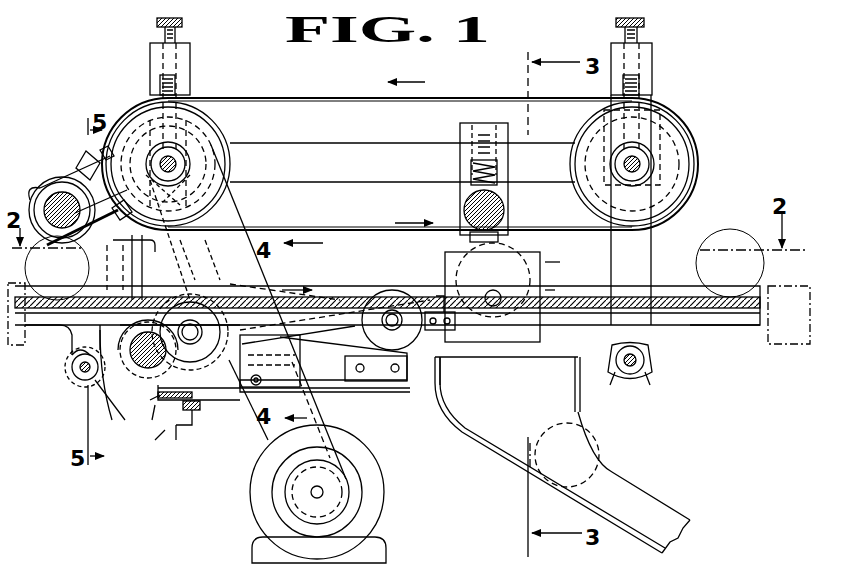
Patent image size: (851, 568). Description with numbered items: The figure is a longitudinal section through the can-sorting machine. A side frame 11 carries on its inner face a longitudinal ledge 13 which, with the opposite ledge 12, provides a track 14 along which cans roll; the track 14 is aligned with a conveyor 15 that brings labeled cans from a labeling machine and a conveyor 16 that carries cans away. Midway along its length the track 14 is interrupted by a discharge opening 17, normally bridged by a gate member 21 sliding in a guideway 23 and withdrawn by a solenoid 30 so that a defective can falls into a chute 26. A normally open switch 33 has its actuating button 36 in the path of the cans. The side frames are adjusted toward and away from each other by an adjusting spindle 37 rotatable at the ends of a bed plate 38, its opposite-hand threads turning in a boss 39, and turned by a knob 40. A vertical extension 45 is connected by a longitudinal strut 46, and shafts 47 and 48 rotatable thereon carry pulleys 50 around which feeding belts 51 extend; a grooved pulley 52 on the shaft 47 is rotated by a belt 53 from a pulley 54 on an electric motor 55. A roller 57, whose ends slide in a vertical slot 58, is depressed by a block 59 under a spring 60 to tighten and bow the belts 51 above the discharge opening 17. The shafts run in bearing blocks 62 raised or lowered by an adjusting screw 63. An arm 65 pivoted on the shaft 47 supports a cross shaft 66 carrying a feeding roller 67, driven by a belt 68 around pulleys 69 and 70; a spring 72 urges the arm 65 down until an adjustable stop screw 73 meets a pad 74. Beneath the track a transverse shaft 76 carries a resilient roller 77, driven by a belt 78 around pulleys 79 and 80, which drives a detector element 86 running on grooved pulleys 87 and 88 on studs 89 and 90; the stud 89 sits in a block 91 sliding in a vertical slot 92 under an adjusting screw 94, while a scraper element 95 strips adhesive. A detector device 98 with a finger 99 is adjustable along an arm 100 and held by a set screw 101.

The longitudinal side frame 11 is at (740, 325).
The longitudinal ledge 12 is at (632, 210).
The longitudinal ledge 13 is at (56, 302).
The track 14 is at (672, 300).
The conveyor 15 is at (64, 347).
The conveyor 16 is at (776, 345).
The discharge opening 17 is at (530, 345).
The gate member 21 is at (545, 290).
The guideway 23 is at (546, 296).
The chute 26 is at (455, 436).
The solenoid 30 is at (440, 358).
The microactuated switch 33 is at (446, 368).
The actuating button 36 is at (440, 300).
The adjusting spindle 37 is at (80, 372).
The bed plate 38 is at (150, 440).
The boss 39 is at (88, 385).
The knob 40 is at (72, 368).
The vertical extension 45 is at (182, 52).
The longitudinal strut 46 is at (414, 161).
The shaft 47 is at (177, 164).
The shaft 48 is at (640, 164).
The pulley 50 is at (198, 108).
The feeding belt 51 is at (370, 232).
The grooved pulley 52 is at (248, 190).
The belt 53 is at (262, 448).
The pulley 54 is at (272, 476).
The electric motor 55 is at (292, 492).
The roller 57 is at (504, 206).
The vertical slot 58 is at (468, 170).
The block 59 is at (494, 184).
The spring 60 is at (492, 162).
The bearing block 62 is at (710, 179).
The adjusting screw 63 is at (176, 84).
The arm 65 is at (93, 160).
The cross shaft 66 is at (75, 187).
The feeding roller 67 is at (48, 200).
The belt 68 is at (102, 149).
The pulley 69 is at (190, 142).
The pulley 70 is at (40, 212).
The spring 72 is at (160, 240).
The adjustable stop screw 73 is at (72, 243).
The pad 74 is at (108, 267).
The transverse shaft 76 is at (140, 372).
The resilient roller 77 is at (150, 380).
The belt 78 is at (200, 252).
The pulley 79 is at (200, 170).
The pulley 80 is at (110, 420).
The detector element 86 is at (360, 380).
The grooved pulley 87 is at (270, 361).
The grooved pulley 88 is at (400, 294).
The stud 89 is at (193, 322).
The stud 90 is at (392, 312).
The block 91 is at (205, 409).
The vertical slot 92 is at (180, 303).
The adjusting screw 94 is at (180, 412).
The scraper element 95 is at (385, 382).
The detector device 98 is at (310, 345).
The finger 99 is at (288, 255).
The arm 100 is at (205, 421).
The set screw 101 is at (260, 420).